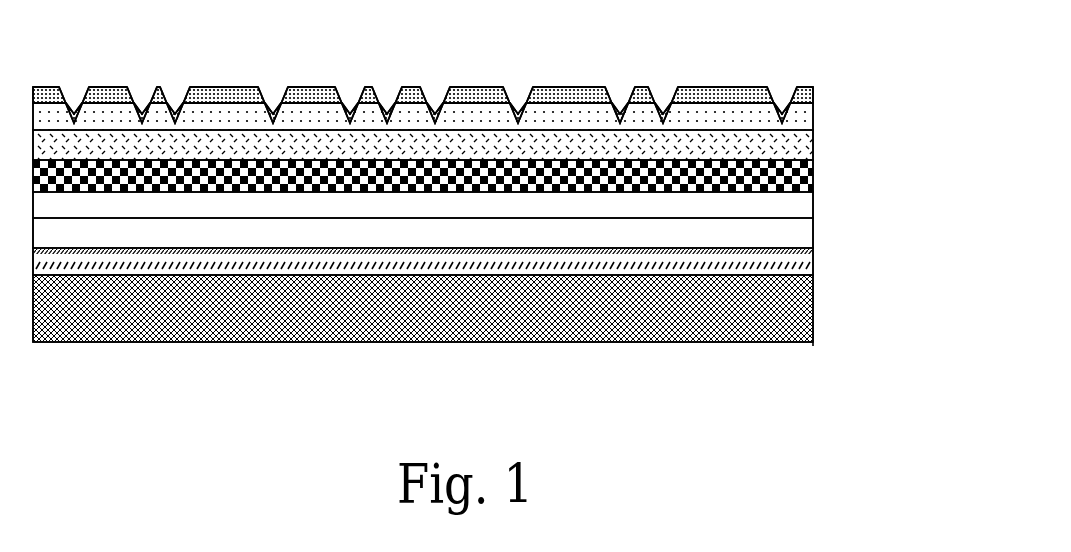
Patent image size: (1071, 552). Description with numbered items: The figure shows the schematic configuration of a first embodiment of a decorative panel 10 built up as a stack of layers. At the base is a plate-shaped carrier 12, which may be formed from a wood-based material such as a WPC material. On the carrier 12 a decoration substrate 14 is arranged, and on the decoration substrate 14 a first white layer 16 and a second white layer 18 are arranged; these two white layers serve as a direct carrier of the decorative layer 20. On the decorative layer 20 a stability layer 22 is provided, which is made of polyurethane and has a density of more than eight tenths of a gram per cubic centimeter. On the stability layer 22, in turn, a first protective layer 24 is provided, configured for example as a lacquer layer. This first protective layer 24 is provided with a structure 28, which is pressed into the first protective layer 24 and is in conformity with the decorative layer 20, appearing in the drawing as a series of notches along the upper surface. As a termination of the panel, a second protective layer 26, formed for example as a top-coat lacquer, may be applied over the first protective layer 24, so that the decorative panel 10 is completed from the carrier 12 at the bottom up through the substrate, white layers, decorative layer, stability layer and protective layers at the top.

The decorative panel 10 is at (850, 55).
The plate-shaped carrier 12 is at (813, 299).
The decoration substrate 14 is at (813, 263).
The first white layer 16 is at (813, 233).
The second white layer 18 is at (813, 200).
The decorative layer 20 is at (813, 169).
The stability layer 22 is at (813, 142).
The first protective layer 24 is at (813, 116).
The second protective layer 26 is at (813, 95).
The structure 28 is at (223, 68).